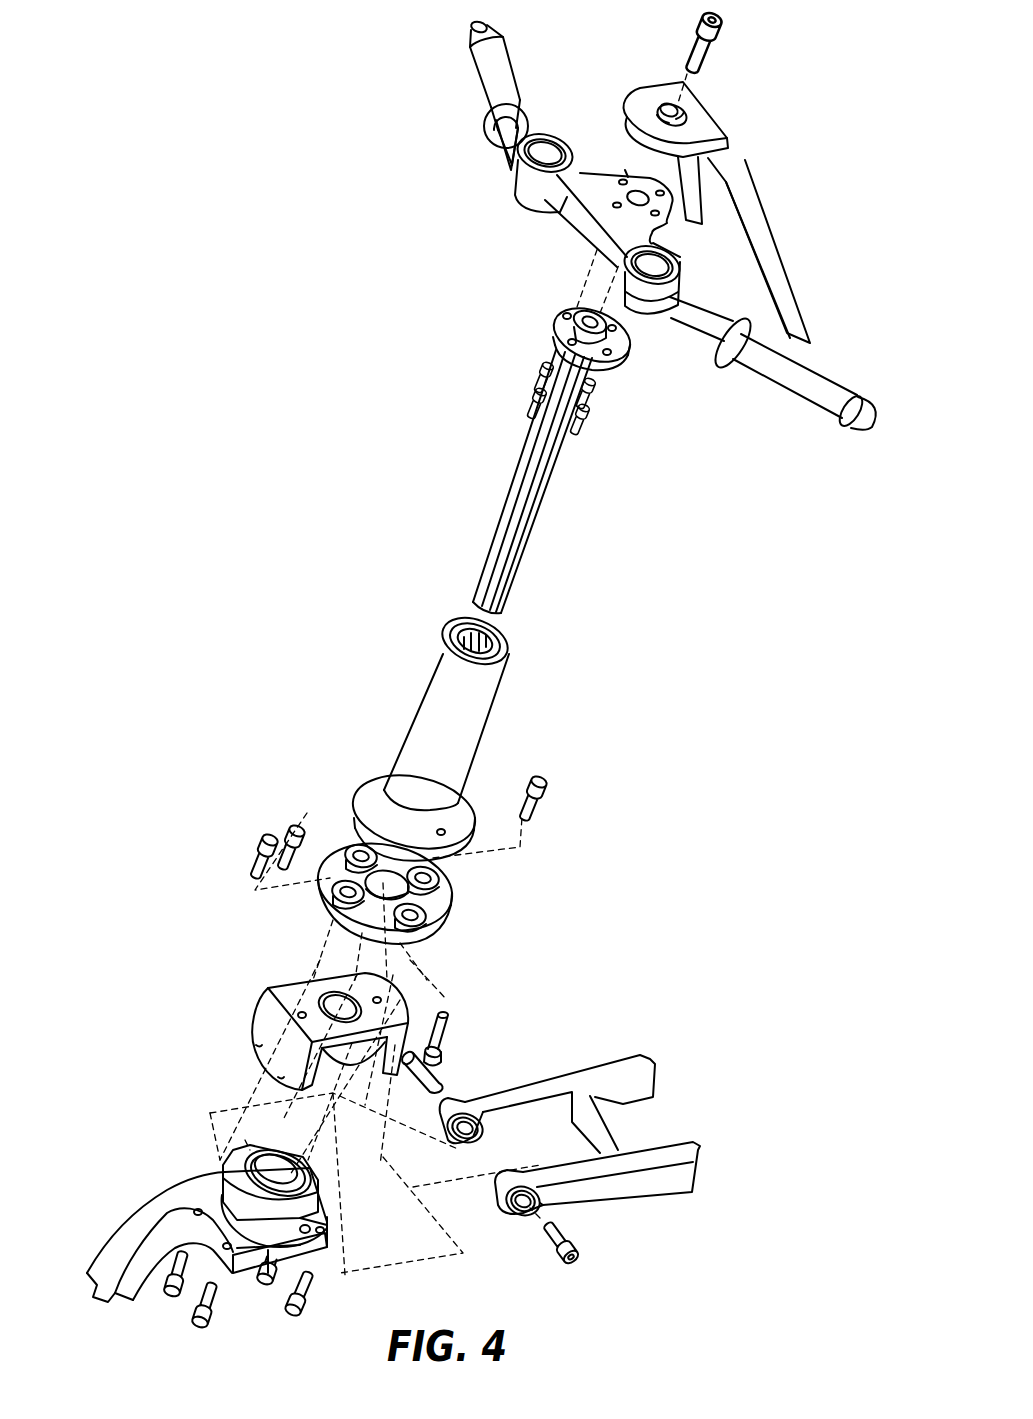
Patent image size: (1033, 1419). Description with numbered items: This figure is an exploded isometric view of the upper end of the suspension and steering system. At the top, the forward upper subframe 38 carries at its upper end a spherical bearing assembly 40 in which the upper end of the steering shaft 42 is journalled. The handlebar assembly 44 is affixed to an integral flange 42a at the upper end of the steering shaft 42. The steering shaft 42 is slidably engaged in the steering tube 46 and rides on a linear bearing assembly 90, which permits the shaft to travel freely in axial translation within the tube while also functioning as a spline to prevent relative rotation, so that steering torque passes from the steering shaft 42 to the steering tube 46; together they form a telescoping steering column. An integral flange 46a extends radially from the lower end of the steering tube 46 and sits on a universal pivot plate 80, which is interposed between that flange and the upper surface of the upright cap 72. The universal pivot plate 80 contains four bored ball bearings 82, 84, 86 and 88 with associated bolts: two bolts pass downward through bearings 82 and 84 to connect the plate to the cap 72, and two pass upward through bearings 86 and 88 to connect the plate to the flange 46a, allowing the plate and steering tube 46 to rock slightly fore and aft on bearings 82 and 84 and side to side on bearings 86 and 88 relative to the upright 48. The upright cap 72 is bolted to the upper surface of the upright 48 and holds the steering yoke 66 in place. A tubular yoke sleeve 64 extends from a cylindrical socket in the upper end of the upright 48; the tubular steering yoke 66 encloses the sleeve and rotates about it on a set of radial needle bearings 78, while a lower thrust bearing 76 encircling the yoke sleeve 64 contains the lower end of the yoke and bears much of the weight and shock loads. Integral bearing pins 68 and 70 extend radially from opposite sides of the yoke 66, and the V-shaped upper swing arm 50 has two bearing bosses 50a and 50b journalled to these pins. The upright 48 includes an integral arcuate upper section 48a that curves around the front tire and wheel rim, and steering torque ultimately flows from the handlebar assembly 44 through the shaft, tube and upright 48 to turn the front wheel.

The forward upper subframe 38 is at (748, 203).
The spherical bearing assembly 40 is at (693, 110).
The steering shaft 42 is at (546, 436).
The integral flange 42a is at (610, 340).
The handlebar assembly 44 is at (600, 215).
The steering tube 46 is at (432, 688).
The integral flange 46a is at (467, 817).
The upright 48 is at (177, 1235).
The arcuate upper section 48a is at (177, 1202).
The upper swing arm 50 is at (570, 1155).
The bearing boss 50a is at (543, 1232).
The bearing boss 50b is at (460, 1098).
The yoke sleeve 64 is at (320, 1170).
The steering yoke 66 is at (227, 1172).
The bearing pin 68 is at (564, 1230).
The bearing pin 70 is at (418, 1080).
The upright cap 72 is at (270, 998).
The lower thrust bearing 76 is at (266, 1266).
The radial needle bearings 78 is at (245, 1140).
The universal pivot plate 80 is at (408, 858).
The bored ball bearing 82 is at (445, 882).
The bored ball bearing 84 is at (325, 895).
The bored ball bearing 86 is at (360, 848).
The bored ball bearing 88 is at (430, 918).
The linear bearing assembly 90 is at (462, 620).